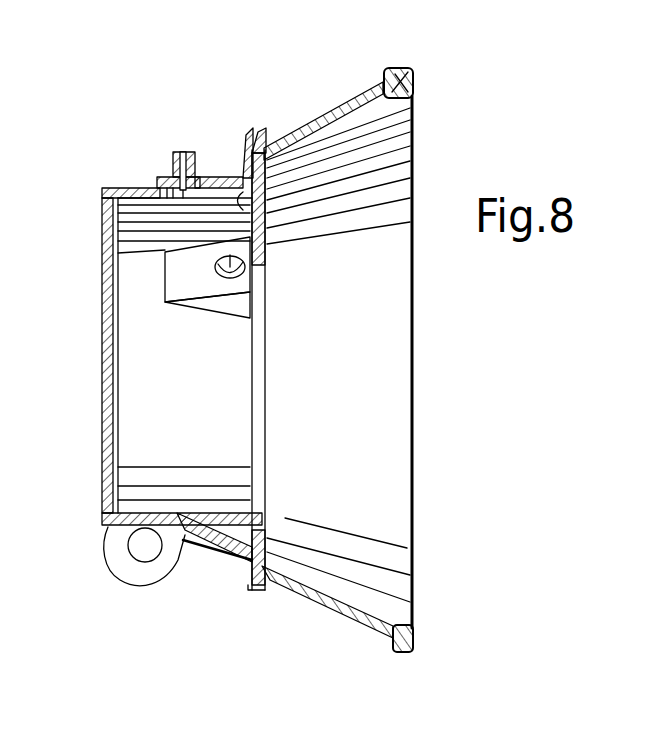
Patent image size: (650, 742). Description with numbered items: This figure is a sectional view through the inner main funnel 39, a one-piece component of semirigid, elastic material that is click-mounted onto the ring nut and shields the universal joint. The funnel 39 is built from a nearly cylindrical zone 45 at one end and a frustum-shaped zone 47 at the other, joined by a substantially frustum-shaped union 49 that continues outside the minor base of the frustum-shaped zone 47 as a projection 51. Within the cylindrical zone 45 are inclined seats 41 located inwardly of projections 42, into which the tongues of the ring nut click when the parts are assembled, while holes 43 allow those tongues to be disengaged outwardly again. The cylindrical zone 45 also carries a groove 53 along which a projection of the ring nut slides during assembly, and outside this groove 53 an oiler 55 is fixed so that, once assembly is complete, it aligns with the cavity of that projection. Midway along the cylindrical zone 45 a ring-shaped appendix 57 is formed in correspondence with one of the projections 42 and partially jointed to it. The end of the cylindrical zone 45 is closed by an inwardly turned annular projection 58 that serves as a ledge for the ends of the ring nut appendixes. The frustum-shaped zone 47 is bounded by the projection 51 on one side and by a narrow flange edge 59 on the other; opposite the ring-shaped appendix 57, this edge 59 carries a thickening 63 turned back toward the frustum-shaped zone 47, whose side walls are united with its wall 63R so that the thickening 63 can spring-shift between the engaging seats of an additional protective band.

The inner main funnel 39 is at (374, 83).
The inclined seats 41 is at (172, 275).
The projections 42 is at (237, 305).
The holes 43 is at (232, 275).
The nearly cylindrical zone 45 is at (121, 187).
The frustum-shaped zone 47 is at (336, 606).
The frustum-shaped union 49 is at (255, 155).
The projection 51 is at (265, 152).
The groove 53 is at (240, 205).
The oiler 55 is at (170, 155).
The ring-shaped appendix 57 is at (115, 555).
The annular projection 58 is at (102, 512).
The narrow flange edge 59 is at (413, 641).
The thickening 63 is at (417, 92).
The wall of the thickening 63R is at (380, 78).